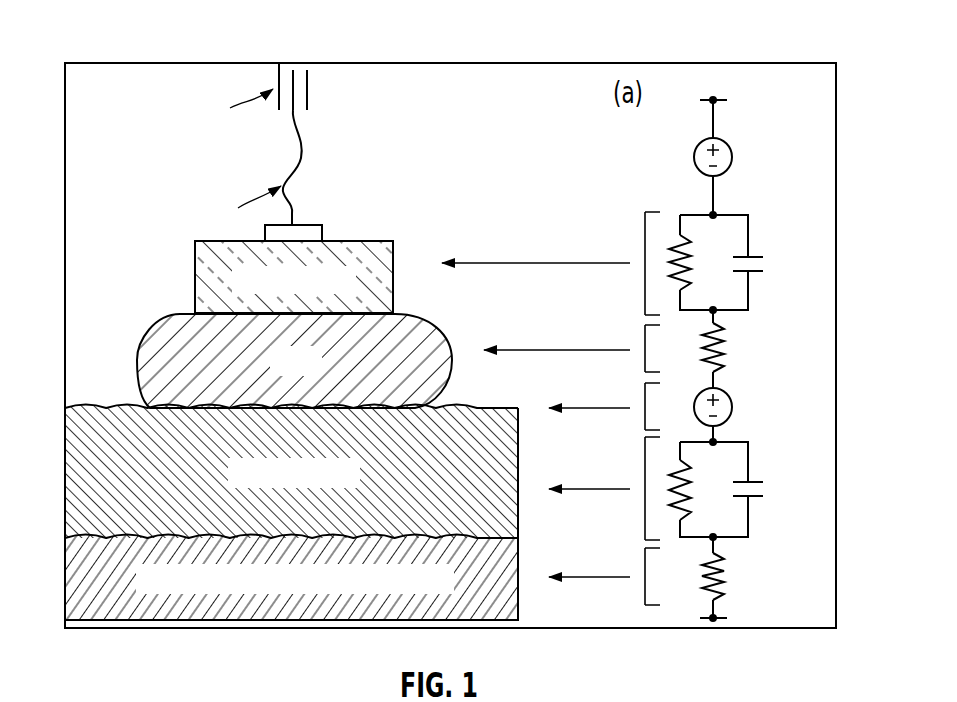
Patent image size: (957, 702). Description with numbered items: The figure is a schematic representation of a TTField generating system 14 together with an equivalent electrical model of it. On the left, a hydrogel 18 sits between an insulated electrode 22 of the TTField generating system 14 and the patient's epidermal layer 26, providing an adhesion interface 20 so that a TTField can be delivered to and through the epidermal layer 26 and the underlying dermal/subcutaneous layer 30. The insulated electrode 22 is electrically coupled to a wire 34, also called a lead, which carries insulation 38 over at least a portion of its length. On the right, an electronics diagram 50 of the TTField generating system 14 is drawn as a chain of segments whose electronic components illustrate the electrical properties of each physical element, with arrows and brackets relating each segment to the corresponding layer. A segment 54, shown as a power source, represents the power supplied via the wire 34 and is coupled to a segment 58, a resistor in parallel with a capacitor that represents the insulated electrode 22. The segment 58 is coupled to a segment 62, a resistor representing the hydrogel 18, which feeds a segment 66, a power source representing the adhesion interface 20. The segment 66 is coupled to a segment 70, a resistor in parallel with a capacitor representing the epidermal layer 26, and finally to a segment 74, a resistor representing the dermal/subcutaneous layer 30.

The TTField generating system 14 is at (107, 86).
The hydrogel 18 is at (177, 318).
The adhesion interface 20 is at (158, 405).
The insulated electrode 22 is at (195, 280).
The epidermal layer 26 is at (68, 456).
The dermal/subcutaneous layer 30 is at (68, 571).
The wire 34 is at (290, 120).
The insulation 38 is at (279, 63).
The electronics diagram 50 is at (740, 49).
The segment 54 is at (790, 145).
The segment 58 is at (799, 237).
The segment 62 is at (799, 320).
The segment 66 is at (799, 392).
The segment 70 is at (799, 487).
The segment 74 is at (799, 578).